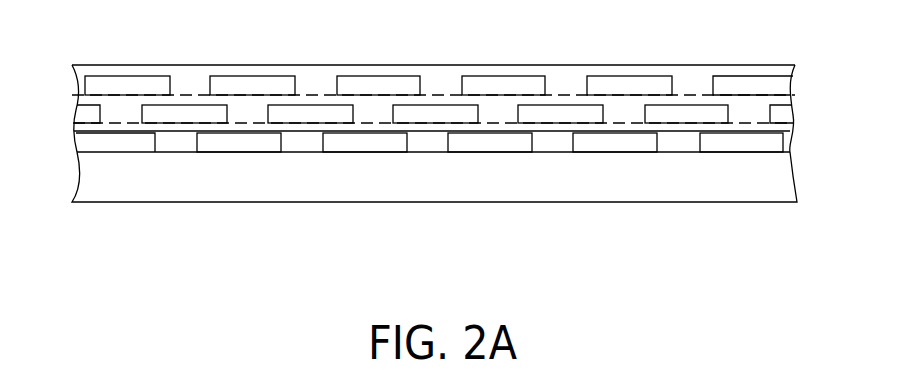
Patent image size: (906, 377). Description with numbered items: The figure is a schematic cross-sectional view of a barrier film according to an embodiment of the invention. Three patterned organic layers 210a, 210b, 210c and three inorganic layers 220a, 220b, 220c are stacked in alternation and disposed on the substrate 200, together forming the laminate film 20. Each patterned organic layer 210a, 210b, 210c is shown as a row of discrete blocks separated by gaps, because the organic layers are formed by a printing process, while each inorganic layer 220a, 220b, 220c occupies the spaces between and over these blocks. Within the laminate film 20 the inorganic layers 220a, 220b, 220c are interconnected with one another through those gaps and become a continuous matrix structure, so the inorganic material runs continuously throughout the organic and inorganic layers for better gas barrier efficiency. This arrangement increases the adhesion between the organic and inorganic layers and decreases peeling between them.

The laminate film 20 is at (63, 65).
The substrate 200 is at (778, 182).
The patterned organic layer 210a is at (777, 143).
The patterned organic layer 210b is at (783, 117).
The patterned organic layer 210c is at (777, 85).
The inorganic layer 220a is at (170, 142).
The inorganic layer 220b is at (255, 103).
The inorganic layer 220c is at (317, 83).